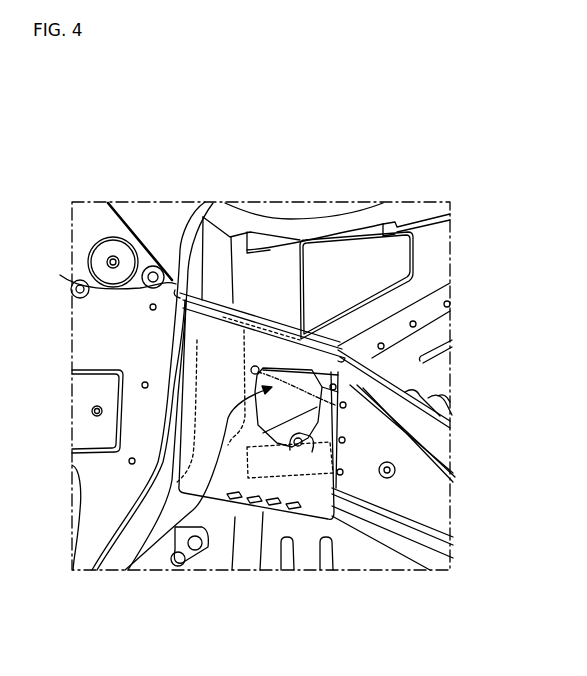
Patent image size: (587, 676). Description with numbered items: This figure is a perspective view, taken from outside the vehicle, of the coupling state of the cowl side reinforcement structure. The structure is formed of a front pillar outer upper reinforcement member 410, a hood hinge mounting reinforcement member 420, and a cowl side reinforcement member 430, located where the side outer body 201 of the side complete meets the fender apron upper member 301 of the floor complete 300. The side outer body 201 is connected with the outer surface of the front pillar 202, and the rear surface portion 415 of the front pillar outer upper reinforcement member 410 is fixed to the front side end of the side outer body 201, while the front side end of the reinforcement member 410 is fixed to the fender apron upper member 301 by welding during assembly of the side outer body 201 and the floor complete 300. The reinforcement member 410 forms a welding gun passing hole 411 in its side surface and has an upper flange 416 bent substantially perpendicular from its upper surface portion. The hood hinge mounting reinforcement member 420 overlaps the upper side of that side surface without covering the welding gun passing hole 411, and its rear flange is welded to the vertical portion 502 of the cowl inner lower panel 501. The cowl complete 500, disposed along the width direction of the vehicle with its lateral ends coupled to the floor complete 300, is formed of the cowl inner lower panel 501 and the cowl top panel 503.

The side outer body 201 is at (72, 325).
The front pillar 202 is at (148, 207).
The floor complete 300 is at (455, 515).
The fender apron upper member 301 is at (443, 490).
The front pillar outer upper reinforcement member 410 is at (170, 449).
The welding gun passing hole 411 is at (297, 570).
The rear surface portion 415 is at (187, 392).
The upper flange 416 is at (72, 278).
The hood hinge mounting reinforcement member 420 is at (335, 339).
The cowl side reinforcement member 430 is at (233, 493).
The cowl complete 500 is at (455, 219).
The cowl inner lower panel 501 is at (453, 341).
The vertical portion 502 is at (445, 262).
The cowl top panel 503 is at (445, 205).